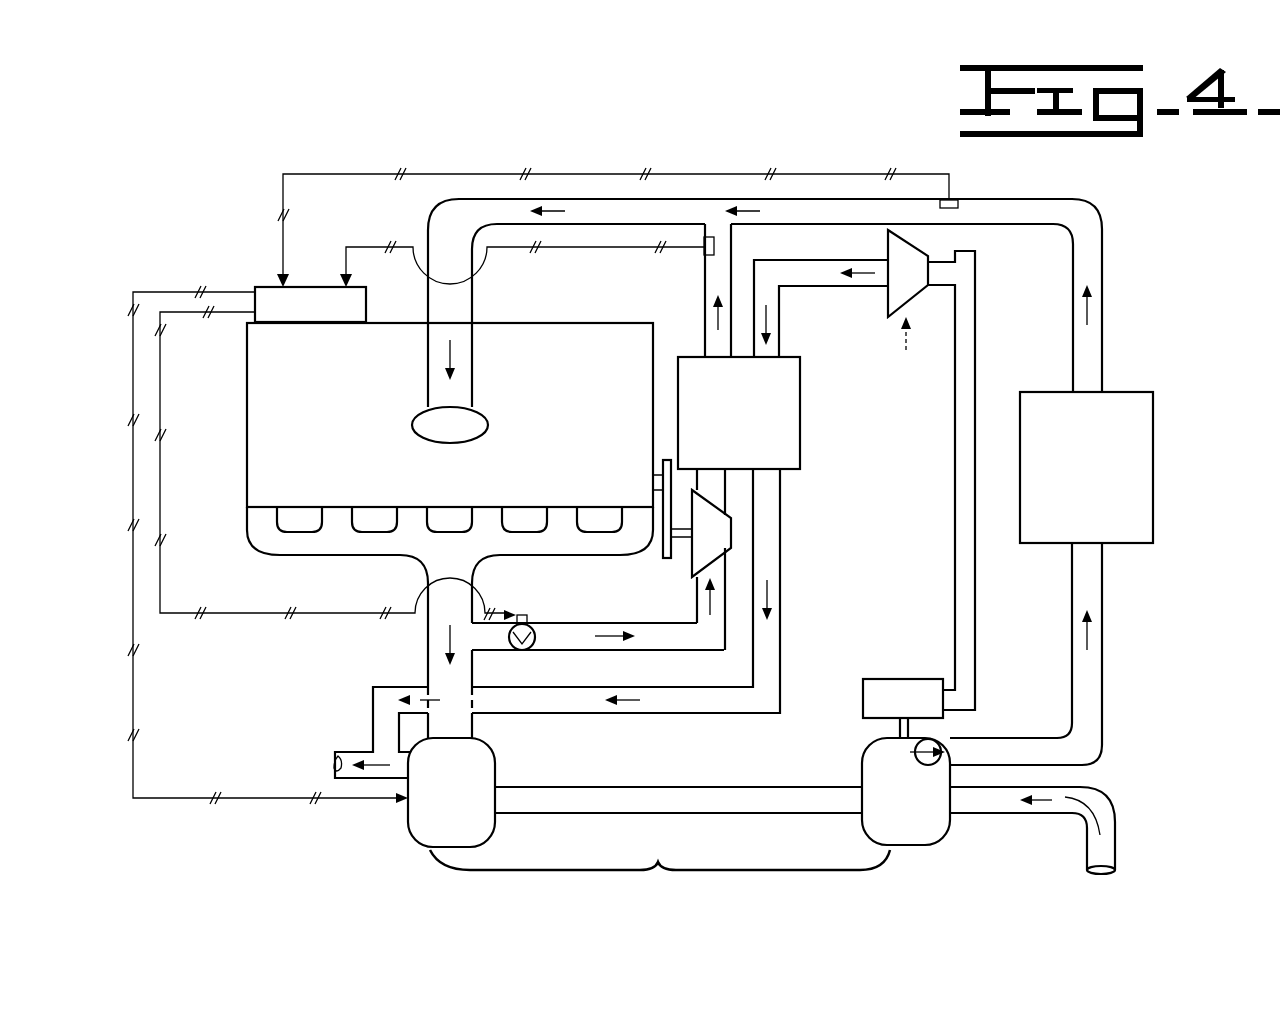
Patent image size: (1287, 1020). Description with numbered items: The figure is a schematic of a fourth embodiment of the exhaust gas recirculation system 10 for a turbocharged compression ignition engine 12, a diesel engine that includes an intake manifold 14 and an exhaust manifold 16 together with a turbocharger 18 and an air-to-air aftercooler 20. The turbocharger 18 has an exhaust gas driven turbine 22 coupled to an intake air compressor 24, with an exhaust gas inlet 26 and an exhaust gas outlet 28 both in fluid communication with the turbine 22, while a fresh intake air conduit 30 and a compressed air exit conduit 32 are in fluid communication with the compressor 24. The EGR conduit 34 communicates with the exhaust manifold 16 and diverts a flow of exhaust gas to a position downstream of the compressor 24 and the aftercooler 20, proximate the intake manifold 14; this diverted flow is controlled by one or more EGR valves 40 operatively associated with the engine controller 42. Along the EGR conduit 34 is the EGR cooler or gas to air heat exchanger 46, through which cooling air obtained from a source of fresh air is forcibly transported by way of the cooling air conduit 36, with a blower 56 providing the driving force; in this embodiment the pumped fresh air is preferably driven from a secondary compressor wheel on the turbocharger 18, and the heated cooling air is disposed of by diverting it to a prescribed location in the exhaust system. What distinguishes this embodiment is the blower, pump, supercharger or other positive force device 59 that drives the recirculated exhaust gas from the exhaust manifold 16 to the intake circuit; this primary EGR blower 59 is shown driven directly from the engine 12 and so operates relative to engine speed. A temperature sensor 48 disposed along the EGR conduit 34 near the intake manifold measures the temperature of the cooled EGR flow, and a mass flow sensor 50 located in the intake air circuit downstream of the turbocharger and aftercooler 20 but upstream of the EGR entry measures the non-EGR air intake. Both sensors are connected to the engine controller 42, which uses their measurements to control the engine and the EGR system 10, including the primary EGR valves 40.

The exhaust gas recirculation system 10 is at (148, 124).
The turbocharged compression ignition engine 12 is at (290, 440).
The intake manifold 14 is at (465, 427).
The exhaust manifold 16 is at (440, 560).
The turbocharger 18 is at (648, 874).
The air-to-air aftercooler 20 is at (1145, 497).
The exhaust gas driven turbine 22 is at (430, 835).
The intake air compressor 24 is at (907, 825).
The exhaust gas inlet 26 is at (472, 722).
The exhaust gas outlet 28 is at (350, 752).
The fresh intake air conduit 30 is at (1110, 800).
The compressed air exit conduit 32 is at (1105, 715).
The EGR conduit 34 is at (597, 623).
The cooling air conduit 36 is at (707, 697).
The EGR valve 40 is at (530, 625).
The engine controller 42 is at (250, 318).
The gas to air heat exchanger 46 is at (783, 346).
The temperature sensor 48 is at (705, 250).
The mass flow sensor 50 is at (953, 203).
The blower 56 is at (893, 295).
The positive force device 59 is at (692, 555).